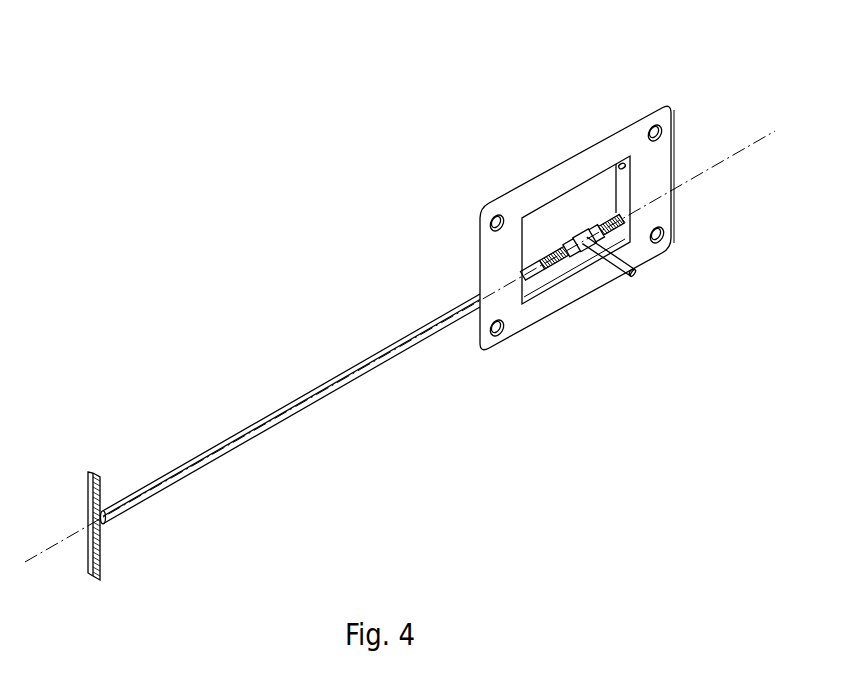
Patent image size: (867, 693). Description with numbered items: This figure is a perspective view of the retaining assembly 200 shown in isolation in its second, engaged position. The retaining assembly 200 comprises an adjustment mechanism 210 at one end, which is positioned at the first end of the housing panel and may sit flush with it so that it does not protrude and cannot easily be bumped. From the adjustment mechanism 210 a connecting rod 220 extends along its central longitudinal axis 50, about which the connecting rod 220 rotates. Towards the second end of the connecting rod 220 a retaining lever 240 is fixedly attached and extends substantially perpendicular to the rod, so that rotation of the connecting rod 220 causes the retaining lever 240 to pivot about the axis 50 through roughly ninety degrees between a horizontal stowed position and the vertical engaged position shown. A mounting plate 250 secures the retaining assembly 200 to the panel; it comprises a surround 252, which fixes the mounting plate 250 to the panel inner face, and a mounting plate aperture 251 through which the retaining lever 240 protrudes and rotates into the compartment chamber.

The retaining assembly 200 is at (296, 201).
The central longitudinal axis 50 is at (763, 131).
The adjustment mechanism 210 is at (98, 470).
The connecting rod 220 is at (340, 388).
The retaining lever 240 is at (620, 277).
The mounting plate 250 is at (665, 217).
The mounting plate aperture 251 is at (563, 212).
The surround 252 is at (598, 157).